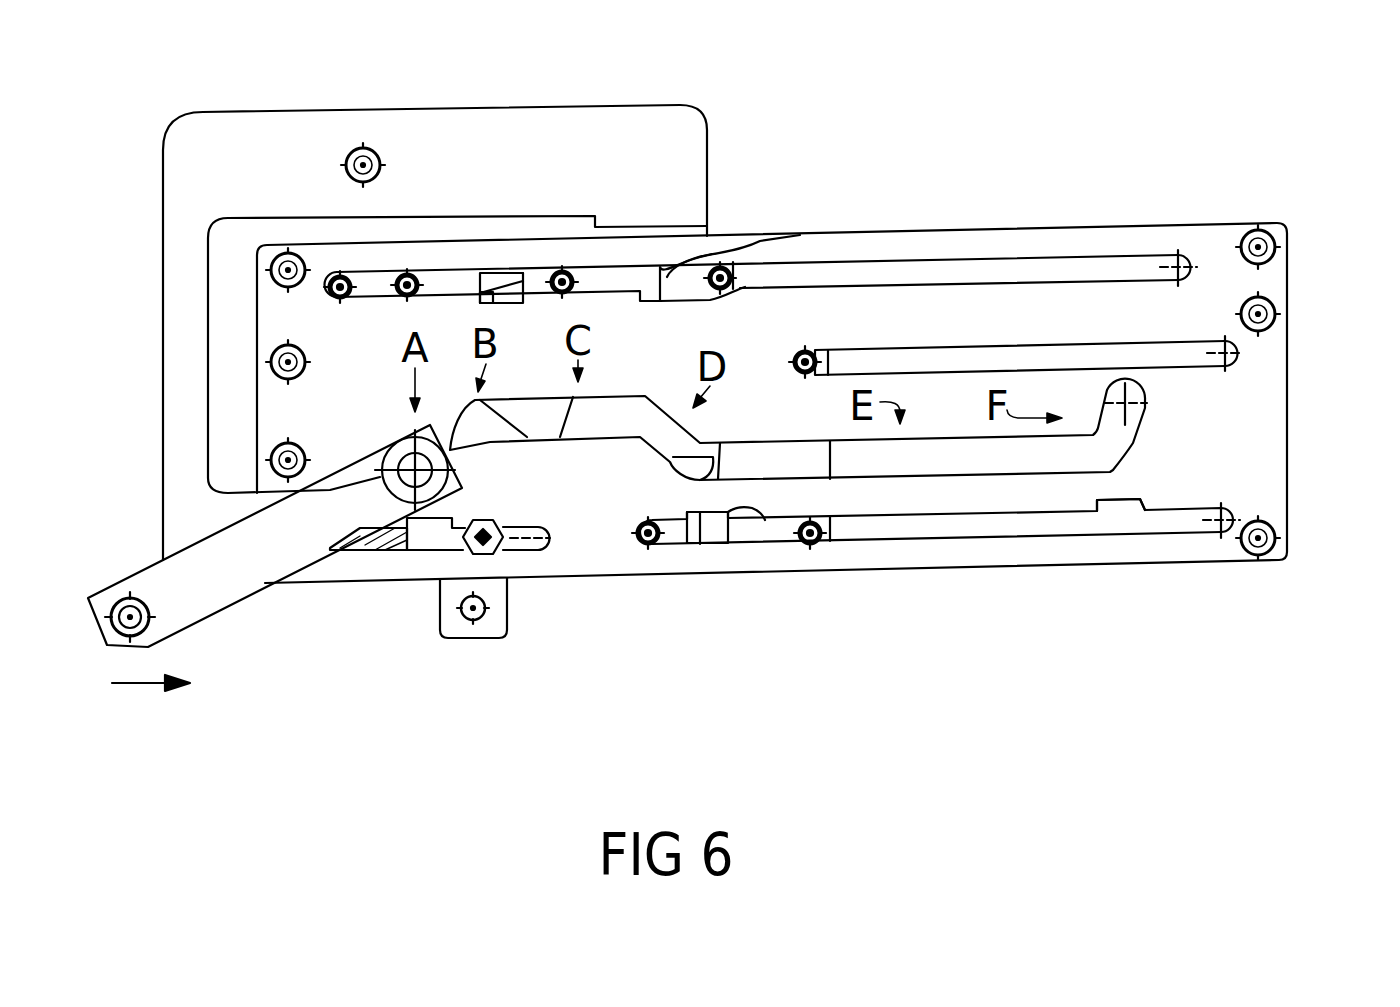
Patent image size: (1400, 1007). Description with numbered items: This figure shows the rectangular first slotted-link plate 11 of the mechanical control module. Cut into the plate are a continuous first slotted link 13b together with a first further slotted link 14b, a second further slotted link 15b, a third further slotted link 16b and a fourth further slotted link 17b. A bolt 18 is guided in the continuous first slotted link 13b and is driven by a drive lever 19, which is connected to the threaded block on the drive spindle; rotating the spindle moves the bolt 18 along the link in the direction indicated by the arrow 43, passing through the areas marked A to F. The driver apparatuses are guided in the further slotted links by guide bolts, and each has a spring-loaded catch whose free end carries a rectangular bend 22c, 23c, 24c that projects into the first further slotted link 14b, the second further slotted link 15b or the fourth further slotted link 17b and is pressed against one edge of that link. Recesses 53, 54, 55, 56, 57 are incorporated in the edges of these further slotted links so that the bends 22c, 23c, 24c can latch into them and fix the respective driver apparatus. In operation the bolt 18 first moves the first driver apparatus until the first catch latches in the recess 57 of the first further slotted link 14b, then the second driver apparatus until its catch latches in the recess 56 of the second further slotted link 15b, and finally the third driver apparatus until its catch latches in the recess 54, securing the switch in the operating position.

The first slotted-link plate 11 is at (1073, 257).
The continuous first slotted link 13b is at (1137, 442).
The first further slotted link 14b is at (540, 533).
The second further slotted link 15b is at (905, 282).
The third further slotted link 16b is at (1200, 364).
The fourth further slotted link 17b is at (936, 540).
The bolt 18 is at (260, 496).
The drive lever 19 is at (135, 568).
The rectangular bend 22c is at (398, 560).
The rectangular bend 23c is at (532, 277).
The rectangular bend 24c is at (700, 548).
The arrow 43 is at (138, 683).
The recess 53 is at (745, 508).
The recess 54 is at (1120, 496).
The recess 55 is at (492, 312).
The recess 56 is at (745, 247).
The recess 57 is at (453, 520).